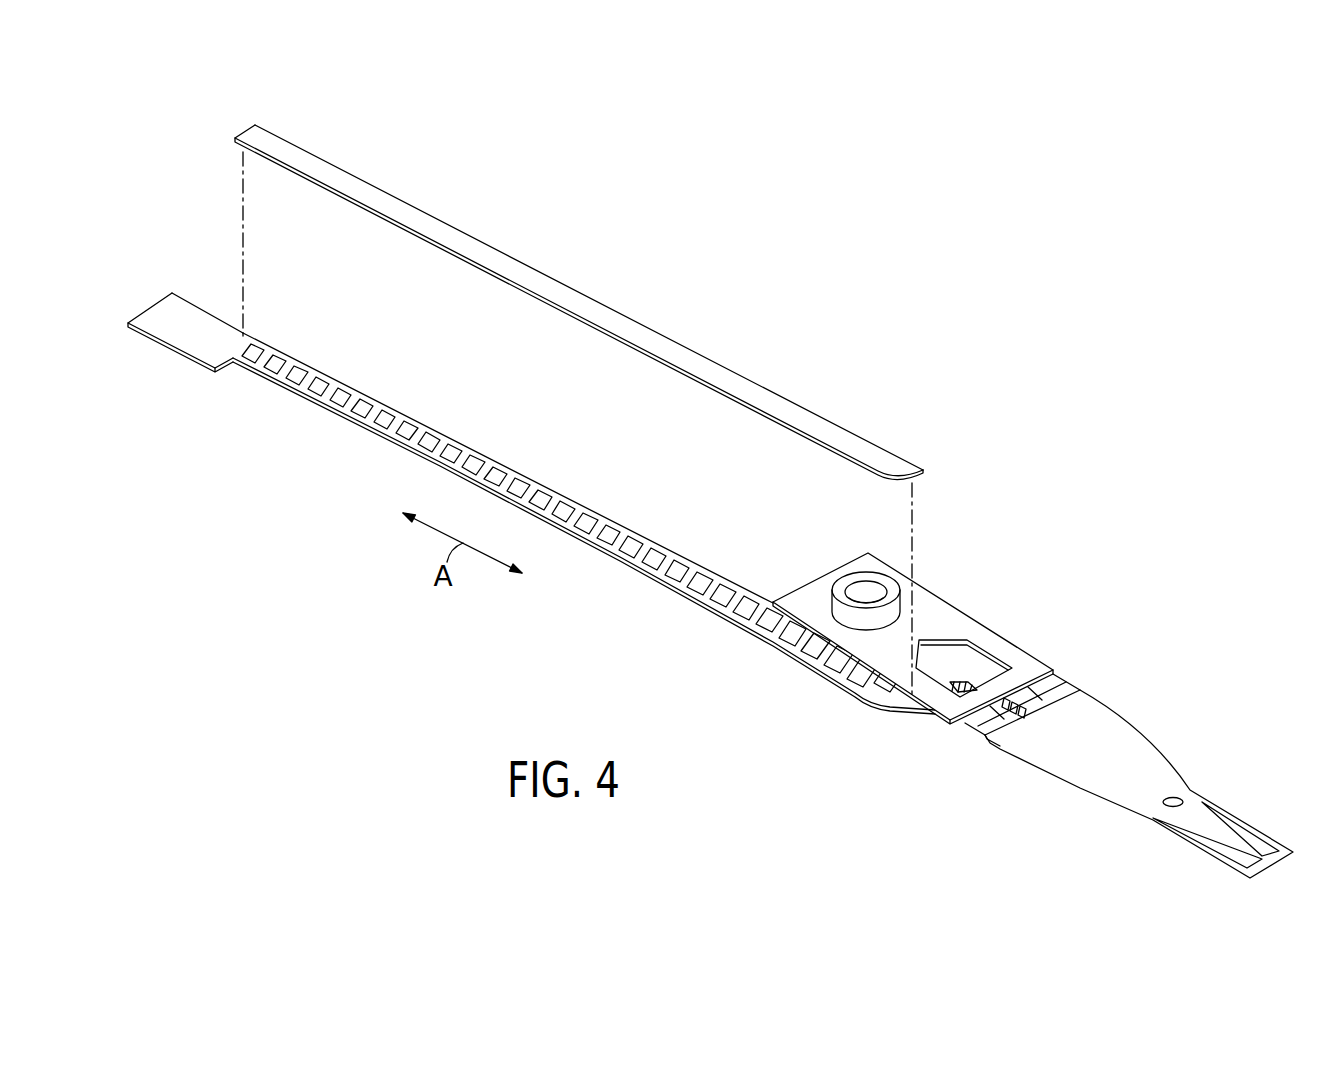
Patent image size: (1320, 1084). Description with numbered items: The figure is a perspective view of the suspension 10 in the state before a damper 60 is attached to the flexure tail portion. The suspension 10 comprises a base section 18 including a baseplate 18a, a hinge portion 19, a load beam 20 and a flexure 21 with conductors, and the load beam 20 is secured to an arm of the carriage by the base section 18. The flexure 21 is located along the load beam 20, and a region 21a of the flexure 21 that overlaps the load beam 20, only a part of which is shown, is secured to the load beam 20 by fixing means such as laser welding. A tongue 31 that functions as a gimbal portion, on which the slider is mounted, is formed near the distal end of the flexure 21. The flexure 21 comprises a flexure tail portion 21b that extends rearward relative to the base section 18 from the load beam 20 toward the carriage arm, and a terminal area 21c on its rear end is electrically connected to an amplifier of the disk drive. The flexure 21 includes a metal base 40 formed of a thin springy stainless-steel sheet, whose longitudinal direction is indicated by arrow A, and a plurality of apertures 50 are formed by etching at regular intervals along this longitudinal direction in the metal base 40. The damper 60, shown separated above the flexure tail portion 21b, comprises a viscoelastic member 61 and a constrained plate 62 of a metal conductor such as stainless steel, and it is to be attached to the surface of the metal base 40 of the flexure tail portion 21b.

The suspension 10 is at (1134, 583).
The base section 18 is at (913, 620).
The baseplate 18a is at (824, 586).
The hinge portion 19 is at (1053, 685).
The load beam 20 is at (1140, 784).
The flexure 21 is at (509, 543).
The region 21a is at (975, 677).
The flexure tail portion 21b is at (379, 450).
The terminal area 21c is at (178, 336).
The tongue 31 is at (1250, 832).
The metal base 40 is at (682, 590).
The apertures 50 is at (650, 547).
The damper 60 is at (579, 302).
The viscoelastic member 61 is at (488, 271).
The constrained plate 62 is at (406, 212).